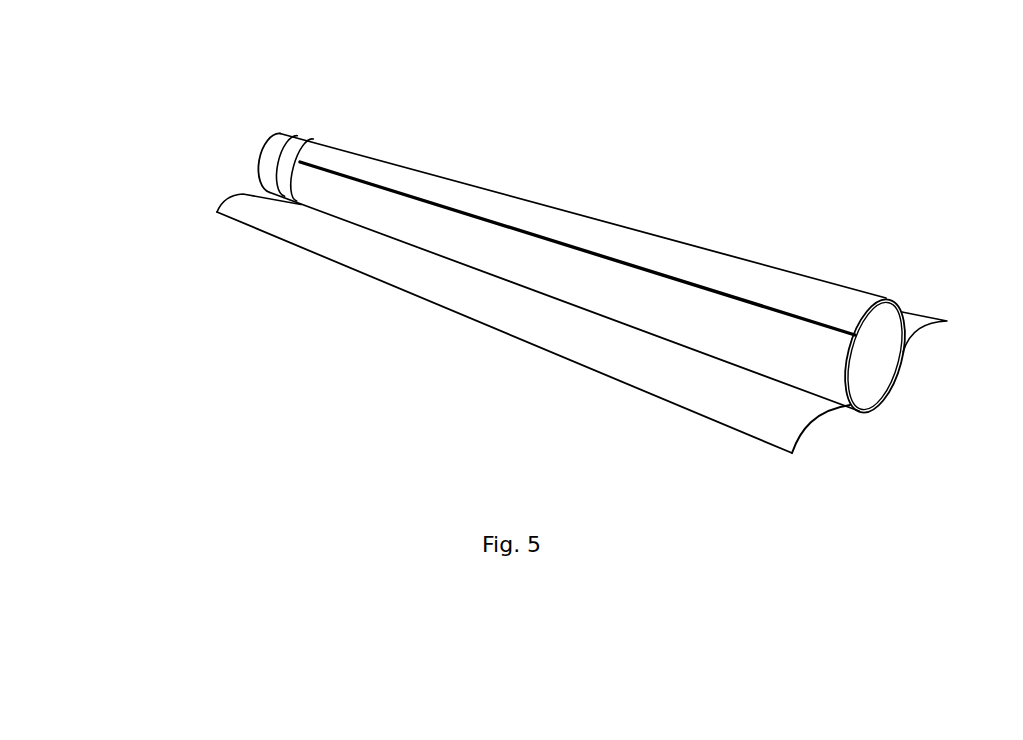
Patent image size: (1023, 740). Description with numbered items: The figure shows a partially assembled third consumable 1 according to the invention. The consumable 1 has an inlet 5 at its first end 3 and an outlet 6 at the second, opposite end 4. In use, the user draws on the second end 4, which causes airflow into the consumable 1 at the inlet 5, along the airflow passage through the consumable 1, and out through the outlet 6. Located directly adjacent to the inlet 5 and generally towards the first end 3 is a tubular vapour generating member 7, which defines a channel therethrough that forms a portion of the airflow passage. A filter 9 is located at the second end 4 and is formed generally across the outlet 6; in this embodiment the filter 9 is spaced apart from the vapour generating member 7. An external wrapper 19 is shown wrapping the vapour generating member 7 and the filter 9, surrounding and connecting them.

The consumable 1 is at (682, 193).
The first end 3 is at (920, 430).
The second end 4 is at (227, 135).
The inlet 5 is at (875, 340).
The outlet 6 is at (258, 161).
The vapour generating member 7 is at (735, 278).
The filter 9 is at (285, 138).
The external wrapper 19 is at (303, 240).